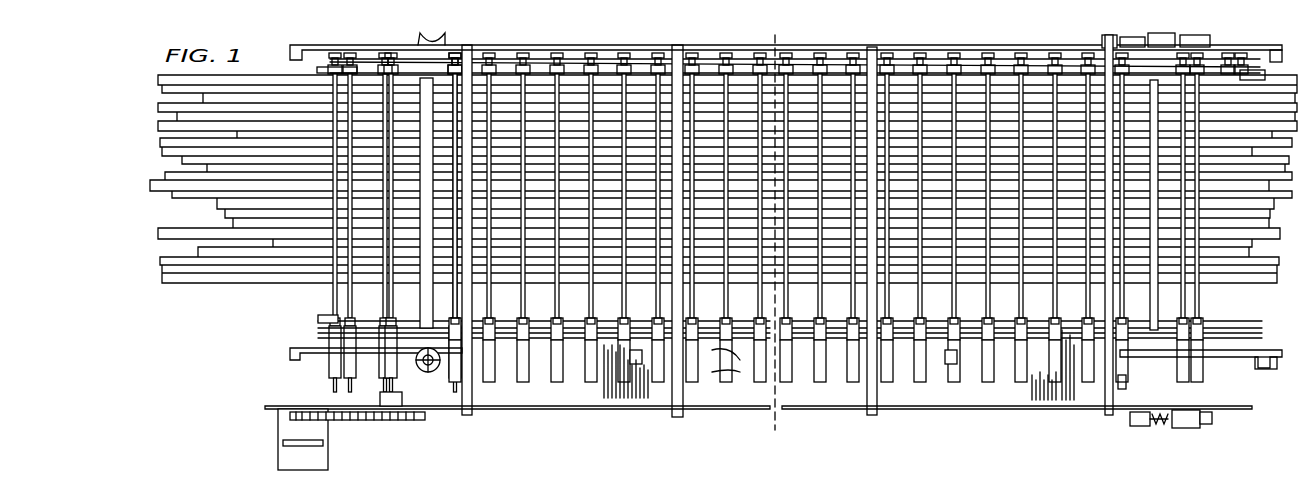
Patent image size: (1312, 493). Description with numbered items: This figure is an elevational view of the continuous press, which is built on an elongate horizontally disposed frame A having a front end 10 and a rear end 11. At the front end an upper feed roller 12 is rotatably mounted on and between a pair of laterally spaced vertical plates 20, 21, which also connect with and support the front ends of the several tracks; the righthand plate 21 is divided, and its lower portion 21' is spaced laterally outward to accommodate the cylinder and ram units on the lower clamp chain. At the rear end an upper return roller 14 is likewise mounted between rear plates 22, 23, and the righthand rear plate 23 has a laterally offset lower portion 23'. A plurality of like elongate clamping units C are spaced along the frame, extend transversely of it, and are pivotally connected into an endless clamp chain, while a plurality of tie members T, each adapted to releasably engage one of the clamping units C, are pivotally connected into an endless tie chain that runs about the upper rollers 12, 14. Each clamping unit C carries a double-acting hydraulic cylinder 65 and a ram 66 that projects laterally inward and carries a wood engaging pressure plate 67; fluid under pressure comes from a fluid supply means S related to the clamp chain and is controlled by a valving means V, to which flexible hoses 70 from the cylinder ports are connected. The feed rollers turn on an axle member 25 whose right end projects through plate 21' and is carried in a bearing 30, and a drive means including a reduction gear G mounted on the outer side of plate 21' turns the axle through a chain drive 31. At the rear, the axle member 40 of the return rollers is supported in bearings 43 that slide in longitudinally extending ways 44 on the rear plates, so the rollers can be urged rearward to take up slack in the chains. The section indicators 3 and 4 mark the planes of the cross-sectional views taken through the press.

The front end 10 is at (275, 388).
The rear end 11 is at (1280, 370).
The upper feed roller 12 is at (408, 312).
The upper return roller 14 is at (1140, 88).
The left front plate 20 is at (314, 45).
The righthand front plate 21 is at (359, 360).
The lower portion of righthand front plate 21' is at (495, 423).
The left rear plate 22 is at (1268, 50).
The righthand rear plate 23 is at (1201, 399).
The lower portion of righthand rear plate 23' is at (1019, 436).
The axle member 25 is at (380, 392).
The bearing 30 is at (402, 398).
The chain drive 31 is at (340, 425).
The axle member 40 is at (1185, 420).
The bearing 43 is at (1193, 428).
The way 44 is at (1208, 424).
The cylinder 65 is at (635, 368).
The ram 66 is at (332, 386).
The pressure plate 67 is at (553, 286).
The hose 70 is at (720, 362).
The tie member T is at (520, 212).
The clamping unit C is at (318, 312).
The fluid supply means S is at (535, 362).
The valving means V is at (606, 373).
The frame A is at (680, 418).
The reduction gear G is at (335, 446).
The section line 3 is at (312, 334).
The section line 4 is at (1038, 340).